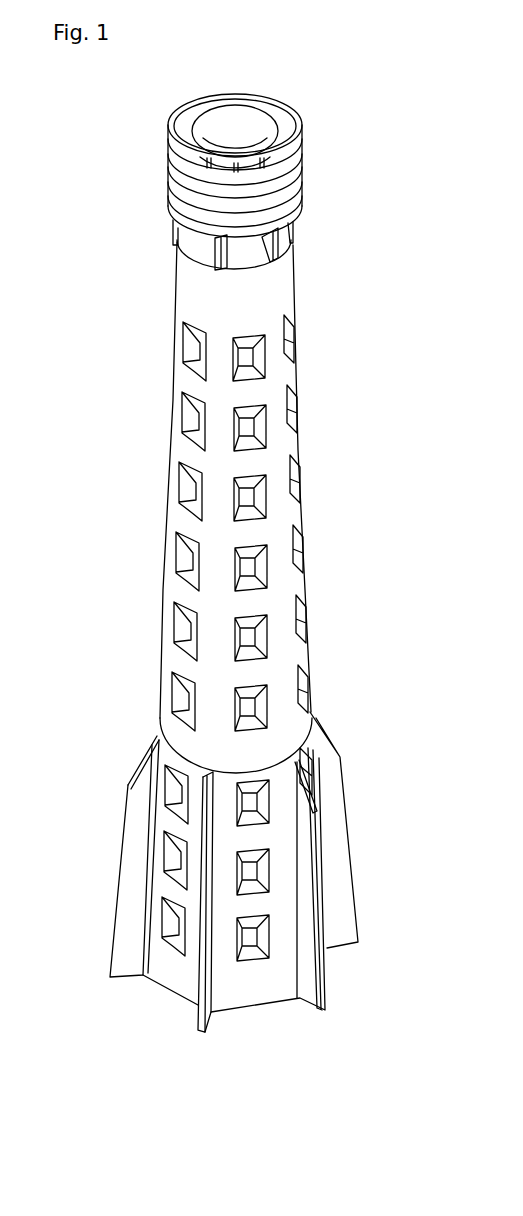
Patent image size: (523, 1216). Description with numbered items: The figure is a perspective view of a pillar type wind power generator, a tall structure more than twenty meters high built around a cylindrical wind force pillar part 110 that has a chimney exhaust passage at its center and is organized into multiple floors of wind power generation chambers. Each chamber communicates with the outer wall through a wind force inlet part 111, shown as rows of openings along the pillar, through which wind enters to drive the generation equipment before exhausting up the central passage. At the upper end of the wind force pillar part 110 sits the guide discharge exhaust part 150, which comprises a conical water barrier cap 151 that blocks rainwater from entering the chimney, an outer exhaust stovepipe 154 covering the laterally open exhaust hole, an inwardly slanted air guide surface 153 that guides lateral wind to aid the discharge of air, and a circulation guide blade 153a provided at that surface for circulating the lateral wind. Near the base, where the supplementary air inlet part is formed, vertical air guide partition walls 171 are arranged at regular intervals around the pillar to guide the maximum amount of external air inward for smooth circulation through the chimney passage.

The wind force pillar part 110 is at (275, 637).
The wind force inlet part 111 is at (290, 345).
The guide discharge exhaust part 150 is at (239, 169).
The conical water barrier cap 151 is at (263, 113).
The air guide surface 153 is at (247, 260).
The circulation guide blade 153a is at (278, 240).
The outer exhaust stovepipe 154 is at (300, 127).
The air guide partition wall 171 is at (343, 787).